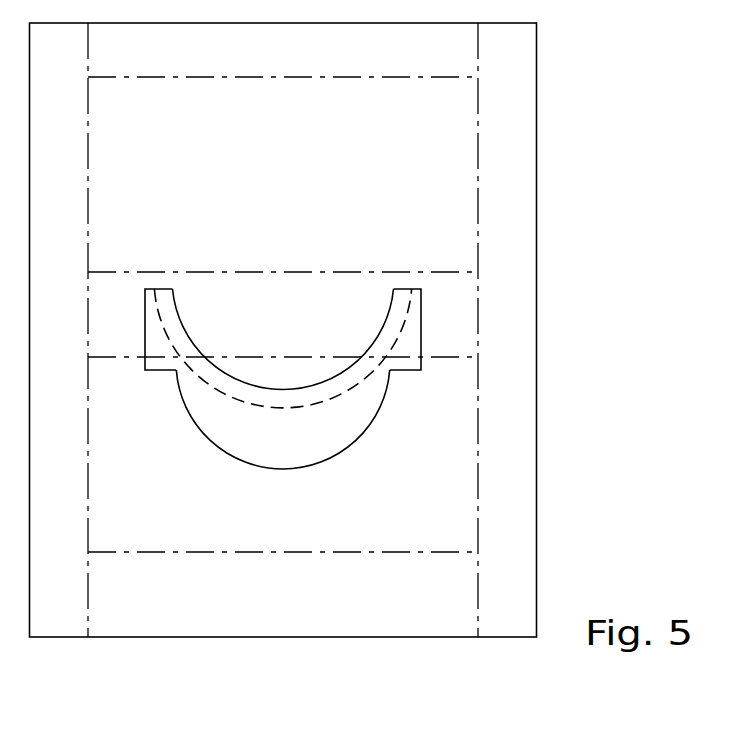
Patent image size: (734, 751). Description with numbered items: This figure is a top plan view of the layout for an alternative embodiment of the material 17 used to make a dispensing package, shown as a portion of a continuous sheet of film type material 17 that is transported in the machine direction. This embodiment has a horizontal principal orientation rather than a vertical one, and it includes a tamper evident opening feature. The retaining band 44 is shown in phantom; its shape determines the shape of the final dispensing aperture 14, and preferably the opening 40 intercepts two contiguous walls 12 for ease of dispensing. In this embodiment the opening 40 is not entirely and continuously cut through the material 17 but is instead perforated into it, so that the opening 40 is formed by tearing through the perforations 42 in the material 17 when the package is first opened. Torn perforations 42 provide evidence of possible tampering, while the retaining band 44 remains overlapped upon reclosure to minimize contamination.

The wall 12 is at (449, 524).
The dispensing aperture 14 is at (299, 373).
The material 17 is at (525, 143).
The opening 40 is at (307, 395).
The perforations 42 is at (243, 400).
The retaining band 44 is at (400, 366).